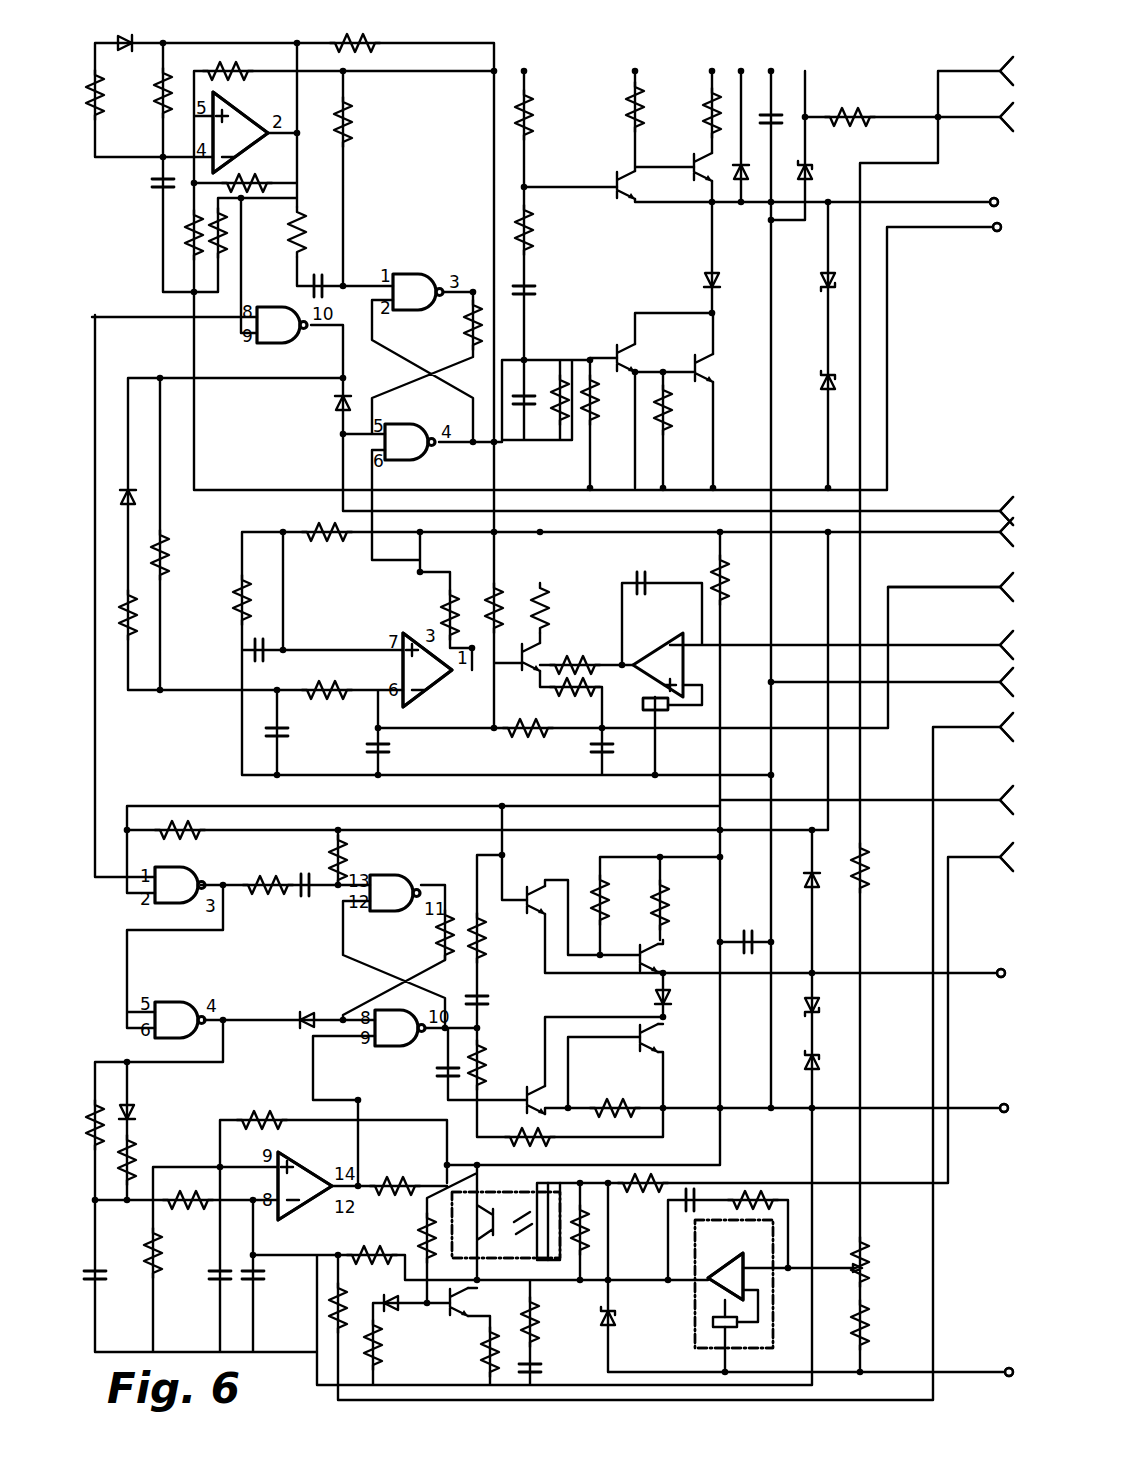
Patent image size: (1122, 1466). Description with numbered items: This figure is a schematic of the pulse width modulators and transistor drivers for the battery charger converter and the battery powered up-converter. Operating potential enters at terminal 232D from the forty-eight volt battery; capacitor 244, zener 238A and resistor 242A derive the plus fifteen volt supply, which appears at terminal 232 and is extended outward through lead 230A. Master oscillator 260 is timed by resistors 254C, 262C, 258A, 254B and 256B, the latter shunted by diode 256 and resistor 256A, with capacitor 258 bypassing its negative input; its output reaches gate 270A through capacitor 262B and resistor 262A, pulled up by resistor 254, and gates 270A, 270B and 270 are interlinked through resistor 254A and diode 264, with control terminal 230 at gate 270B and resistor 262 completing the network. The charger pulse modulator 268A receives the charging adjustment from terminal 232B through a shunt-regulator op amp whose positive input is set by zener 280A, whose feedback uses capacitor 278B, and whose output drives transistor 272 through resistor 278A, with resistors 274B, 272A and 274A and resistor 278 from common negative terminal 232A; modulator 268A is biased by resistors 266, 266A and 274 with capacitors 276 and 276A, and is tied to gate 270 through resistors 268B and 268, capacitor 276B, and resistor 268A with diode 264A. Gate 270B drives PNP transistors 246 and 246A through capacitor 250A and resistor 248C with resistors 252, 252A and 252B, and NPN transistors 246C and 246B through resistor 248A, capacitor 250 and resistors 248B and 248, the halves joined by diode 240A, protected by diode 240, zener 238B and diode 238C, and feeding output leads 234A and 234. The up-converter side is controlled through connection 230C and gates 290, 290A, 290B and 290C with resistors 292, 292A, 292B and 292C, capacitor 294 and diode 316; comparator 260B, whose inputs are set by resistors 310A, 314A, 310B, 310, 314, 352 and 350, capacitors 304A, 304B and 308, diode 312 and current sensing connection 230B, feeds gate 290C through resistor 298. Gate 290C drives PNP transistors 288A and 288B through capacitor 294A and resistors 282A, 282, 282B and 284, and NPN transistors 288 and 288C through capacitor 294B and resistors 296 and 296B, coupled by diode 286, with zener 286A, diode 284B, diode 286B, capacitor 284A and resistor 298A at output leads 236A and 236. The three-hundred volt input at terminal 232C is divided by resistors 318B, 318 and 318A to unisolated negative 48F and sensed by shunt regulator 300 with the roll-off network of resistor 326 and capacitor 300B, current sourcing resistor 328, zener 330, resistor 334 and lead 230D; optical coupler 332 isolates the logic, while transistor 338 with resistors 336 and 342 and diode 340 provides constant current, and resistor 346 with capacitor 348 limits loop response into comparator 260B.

The diode 256 is at (132, 44).
The resistor 256A is at (98, 110).
The resistor 256B is at (162, 110).
The resistor 254C is at (233, 69).
The resistor 254B is at (378, 43).
The master oscillator IC 260 is at (238, 100).
The resistor 258A is at (234, 183).
The capacitor 258 is at (145, 177).
The resistor 254 is at (344, 128).
The resistor 262C is at (190, 242).
The resistor 262 is at (208, 249).
The resistor 262A is at (294, 244).
The capacitor 262B is at (318, 286).
The NAND gate 270A is at (430, 260).
The NAND gate 270 is at (296, 348).
The resistor 254A is at (473, 330).
The NAND gate 270B is at (432, 414).
The diode 264 is at (340, 408).
The diode 264A is at (138, 504).
The resistor 268 is at (162, 578).
The pulse modulator IC 268A is at (130, 606).
The resistor 266 is at (320, 520).
The resistor 266A is at (242, 626).
The capacitor 276 is at (256, 664).
The resistor 268B is at (312, 684).
The capacitor 276B is at (282, 728).
The capacitor 276A is at (371, 746).
The resistor 274 is at (456, 586).
The resistor 274A is at (499, 594).
The resistor 274B is at (538, 606).
The PNP transistor 272 is at (524, 680).
The resistor 278A is at (598, 648).
The resistor 272A is at (568, 696).
The resistor 278 is at (502, 740).
The capacitor 278B is at (634, 576).
The zener regulator 280A is at (678, 730).
The resistor 282 is at (720, 562).
The input terminal 232C is at (998, 66).
The supply terminal 232D is at (1000, 120).
The active output lead 234A is at (994, 198).
The passive transistor driver output lead 234 is at (996, 232).
The capacitor 244 is at (776, 104).
The resistor 242A is at (874, 104).
The zener diode 238A is at (818, 166).
The zener diode 238B is at (818, 293).
The diode 238C is at (820, 388).
The diode 240 is at (738, 202).
The diode 240A is at (698, 282).
The resistor 252 is at (530, 106).
The resistor 252A is at (632, 104).
The resistor 252B is at (710, 96).
The PNP transistor 246 is at (614, 180).
The PNP transistor 246A is at (692, 151).
The resistor 248C is at (533, 234).
The capacitor 250A is at (536, 300).
The capacitor 250 is at (558, 374).
The resistor 248A is at (536, 444).
The NPN transistor 246C is at (627, 341).
The NPN transistor 246B is at (702, 352).
The resistor 248 is at (660, 408).
The resistor 248B is at (592, 424).
The external control terminal 230 is at (990, 508).
The 15 volt supply terminal 232 is at (990, 536).
The common negative terminal 232A is at (990, 584).
The input terminal 232B is at (990, 640).
The external lead 230A is at (993, 680).
The current sensing transformer connection 230B is at (992, 724).
The external connection 230C is at (992, 796).
The circuit input lead 230D is at (993, 855).
The resistor 292 is at (204, 830).
The NAND gate 290 is at (180, 878).
The resistor 292B is at (246, 886).
The capacitor 294 is at (312, 898).
The resistor 292A is at (336, 842).
The NAND gate 290A is at (400, 866).
The resistor 282A is at (455, 913).
The resistor 292C is at (442, 940).
The NAND gate 290B is at (196, 1002).
The diode 316 is at (322, 996).
The NAND gate 290C is at (414, 1048).
The capacitor 294A is at (510, 986).
The resistor 296 is at (483, 1044).
The NPN transistor 288 is at (524, 1102).
The capacitor 294B is at (438, 1084).
The resistor 310 is at (110, 1094).
The diode 312 is at (134, 1116).
The resistor 314 is at (132, 1150).
The resistor 310B is at (200, 1168).
The resistor 310A is at (258, 1114).
The resistor 314A is at (158, 1250).
The capacitor 308 is at (102, 1284).
The capacitor 304B is at (216, 1288).
The capacitor 304A is at (256, 1286).
The quad comparator IC 260B is at (296, 1220).
The resistor 352 is at (333, 1280).
The resistor 350 is at (379, 1260).
The resistor 298 is at (408, 1180).
The resistor 336 is at (418, 1234).
The optical coupler 332 is at (507, 1192).
The transistor 338 is at (466, 1296).
The diode 340 is at (384, 1310).
The resistor 334 is at (484, 1340).
The resistor 342 is at (378, 1356).
The resistor 346 is at (532, 1310).
The capacitor 348 is at (536, 1366).
The current sourcing resistor 328 is at (658, 1190).
The capacitor 300B is at (704, 1198).
The resistor 326 is at (752, 1224).
The shunt regulator 300 is at (706, 1281).
The protective zener diode 330 is at (614, 1328).
The adjustable resistor 318 is at (870, 1248).
The resistor 318A is at (868, 1312).
The resistor 318B is at (866, 866).
The unisolated negative lead 48F is at (1004, 1366).
The diode 284B is at (824, 880).
The zener diode 286A is at (822, 1014).
The zener diode 286B is at (826, 1066).
The active output lead 236A is at (994, 972).
The external output lead 236 is at (994, 1108).
The PNP transistor 288A is at (542, 882).
The resistor 282B is at (608, 902).
The resistor 284 is at (672, 916).
The PNP transistor 288B is at (646, 948).
The capacitor 284A is at (734, 950).
The diode 286 is at (635, 995).
The NPN transistor 288C is at (642, 1052).
The resistor 296B is at (630, 1100).
The resistor 298A is at (552, 1144).